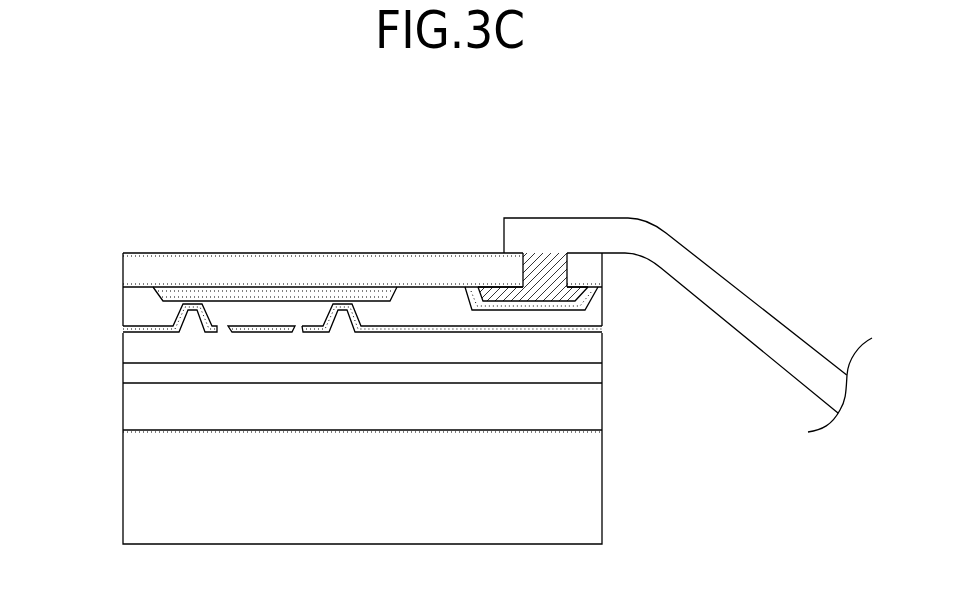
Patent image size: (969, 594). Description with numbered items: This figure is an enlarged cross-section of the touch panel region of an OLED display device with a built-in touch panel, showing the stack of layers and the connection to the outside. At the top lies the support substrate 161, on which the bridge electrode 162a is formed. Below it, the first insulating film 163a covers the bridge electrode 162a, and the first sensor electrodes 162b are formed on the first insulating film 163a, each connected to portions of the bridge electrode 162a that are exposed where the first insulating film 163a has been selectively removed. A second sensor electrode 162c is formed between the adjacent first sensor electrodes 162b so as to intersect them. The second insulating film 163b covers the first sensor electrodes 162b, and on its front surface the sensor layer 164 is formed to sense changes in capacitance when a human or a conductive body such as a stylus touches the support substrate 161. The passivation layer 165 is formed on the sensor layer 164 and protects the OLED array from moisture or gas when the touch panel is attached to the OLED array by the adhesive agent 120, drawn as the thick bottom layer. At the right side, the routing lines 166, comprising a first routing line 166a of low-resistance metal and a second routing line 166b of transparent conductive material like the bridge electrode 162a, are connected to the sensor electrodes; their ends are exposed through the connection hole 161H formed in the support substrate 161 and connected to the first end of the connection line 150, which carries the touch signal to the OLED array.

The adhesive agent 120 is at (123, 490).
The passivation layer 165 is at (123, 410).
The sensor layer 164 is at (123, 375).
The first insulating film 163a is at (123, 303).
The second insulating film 163b is at (123, 353).
The bridge electrode 162a is at (267, 293).
The first sensor electrodes 162b is at (152, 334).
The second sensor electrode 162c is at (258, 334).
The support substrate 161 is at (123, 269).
The connection hole 161H is at (523, 268).
The routing lines 166 is at (595, 300).
The first routing line 166a is at (583, 295).
The second routing line 166b is at (562, 303).
The connection line 150 is at (707, 277).